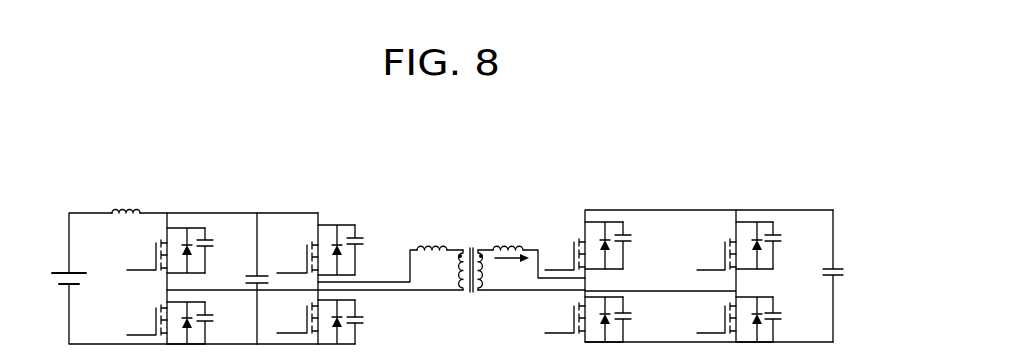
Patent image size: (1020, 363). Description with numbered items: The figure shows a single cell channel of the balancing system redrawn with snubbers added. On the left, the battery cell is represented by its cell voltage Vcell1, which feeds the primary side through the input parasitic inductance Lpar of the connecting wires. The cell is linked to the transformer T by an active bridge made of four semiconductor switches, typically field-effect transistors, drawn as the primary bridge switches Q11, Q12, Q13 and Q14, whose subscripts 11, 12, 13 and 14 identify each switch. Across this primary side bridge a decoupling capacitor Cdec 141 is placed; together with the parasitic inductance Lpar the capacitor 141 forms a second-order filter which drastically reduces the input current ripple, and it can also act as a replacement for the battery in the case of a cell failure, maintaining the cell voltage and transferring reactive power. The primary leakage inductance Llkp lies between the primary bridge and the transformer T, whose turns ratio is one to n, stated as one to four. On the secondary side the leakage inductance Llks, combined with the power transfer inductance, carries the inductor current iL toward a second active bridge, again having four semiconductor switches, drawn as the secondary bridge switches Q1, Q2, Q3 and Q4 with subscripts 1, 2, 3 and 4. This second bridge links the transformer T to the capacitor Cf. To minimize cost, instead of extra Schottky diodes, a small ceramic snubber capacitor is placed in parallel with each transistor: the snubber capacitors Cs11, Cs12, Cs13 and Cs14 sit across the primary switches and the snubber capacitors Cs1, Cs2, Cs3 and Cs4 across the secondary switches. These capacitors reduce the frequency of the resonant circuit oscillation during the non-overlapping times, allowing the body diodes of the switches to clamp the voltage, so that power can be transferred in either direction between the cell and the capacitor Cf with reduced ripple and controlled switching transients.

The decoupling capacitor 141 is at (257, 254).
The decoupling capacitor Cdec is at (239, 278).
The secondary bridge switch Q1 is at (565, 254).
The secondary bridge switch Q2 is at (716, 254).
The secondary bridge switch Q3 is at (565, 318).
The secondary bridge switch Q4 is at (716, 318).
The primary bridge switch Q11 is at (297, 257).
The primary bridge switch Q12 is at (147, 256).
The primary bridge switch Q13 is at (297, 318).
The primary bridge switch Q14 is at (147, 320).
The transistor Q1 1 is at (565, 254).
The transistor Q2 2 is at (716, 254).
The transistor Q3 3 is at (565, 318).
The transistor Q4 4 is at (716, 318).
The transistor Q11 11 is at (297, 257).
The transistor Q12 12 is at (147, 256).
The transistor Q13 13 is at (297, 318).
The transistor Q14 14 is at (147, 320).
The snubber capacitor Cs1 is at (640, 245).
The snubber capacitor Cs2 is at (790, 245).
The snubber capacitor Cs3 is at (641, 321).
The snubber capacitor Cs4 is at (790, 319).
The snubber capacitor Cs11 is at (374, 250).
The snubber capacitor Cs12 is at (223, 250).
The snubber capacitor Cs13 is at (371, 326).
The snubber capacitor Cs14 is at (224, 324).
The capacitor Cf is at (824, 276).
The input parasitic inductance Lpar is at (127, 225).
The primary leakage inductance Llkp is at (432, 237).
The secondary leakage inductance Llks is at (507, 237).
The transformer T is at (458, 228).
The inductor current iL is at (512, 270).
The cell voltage Vcell1 is at (91, 276).